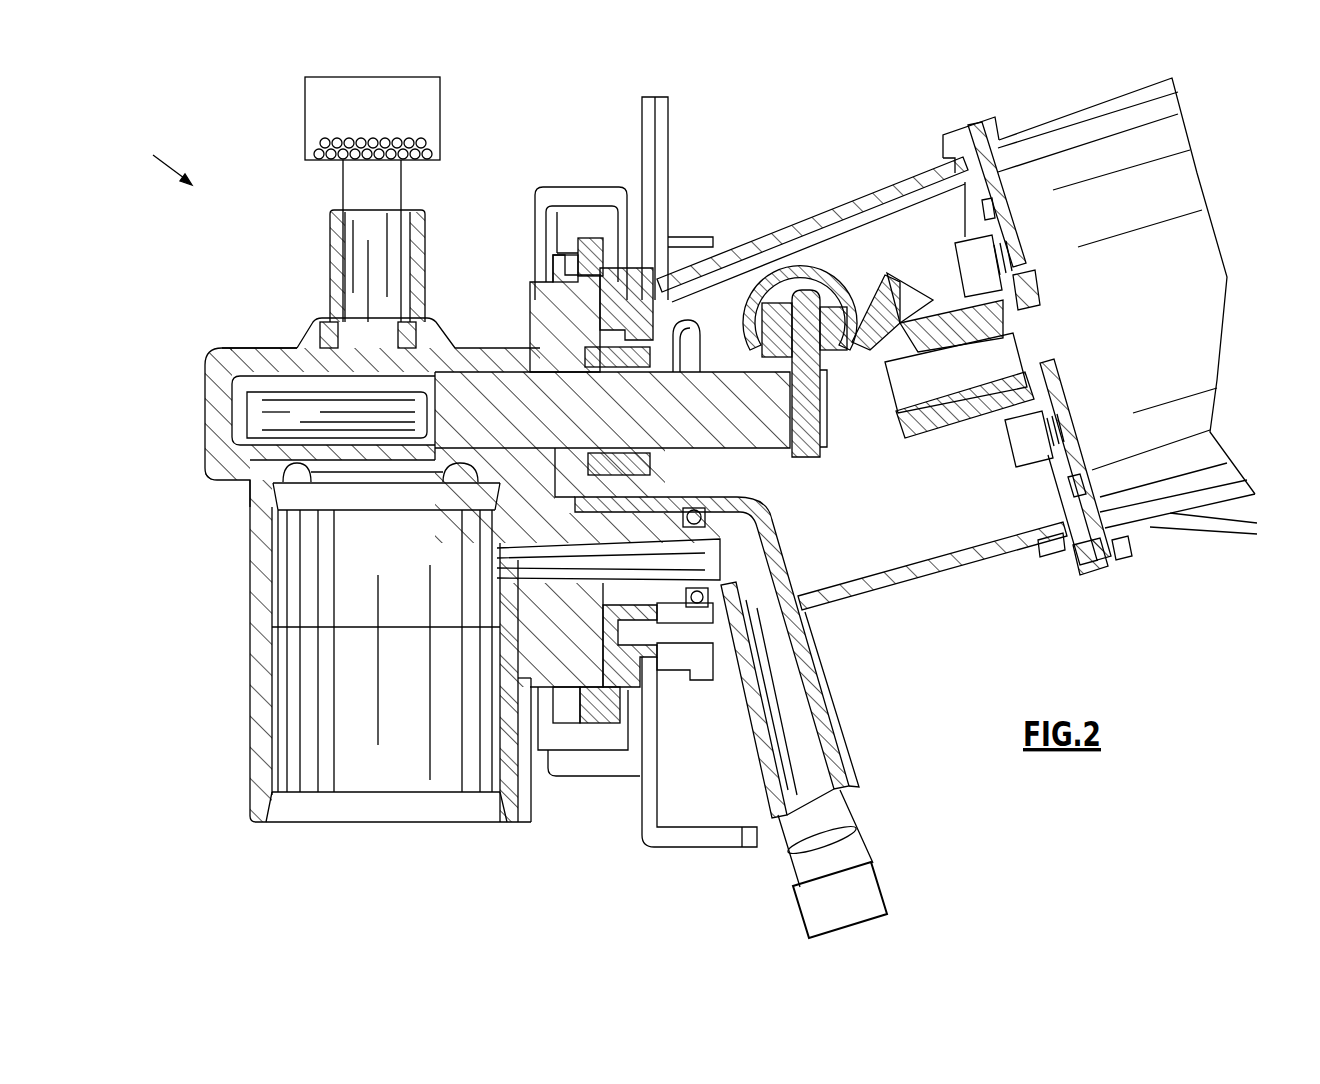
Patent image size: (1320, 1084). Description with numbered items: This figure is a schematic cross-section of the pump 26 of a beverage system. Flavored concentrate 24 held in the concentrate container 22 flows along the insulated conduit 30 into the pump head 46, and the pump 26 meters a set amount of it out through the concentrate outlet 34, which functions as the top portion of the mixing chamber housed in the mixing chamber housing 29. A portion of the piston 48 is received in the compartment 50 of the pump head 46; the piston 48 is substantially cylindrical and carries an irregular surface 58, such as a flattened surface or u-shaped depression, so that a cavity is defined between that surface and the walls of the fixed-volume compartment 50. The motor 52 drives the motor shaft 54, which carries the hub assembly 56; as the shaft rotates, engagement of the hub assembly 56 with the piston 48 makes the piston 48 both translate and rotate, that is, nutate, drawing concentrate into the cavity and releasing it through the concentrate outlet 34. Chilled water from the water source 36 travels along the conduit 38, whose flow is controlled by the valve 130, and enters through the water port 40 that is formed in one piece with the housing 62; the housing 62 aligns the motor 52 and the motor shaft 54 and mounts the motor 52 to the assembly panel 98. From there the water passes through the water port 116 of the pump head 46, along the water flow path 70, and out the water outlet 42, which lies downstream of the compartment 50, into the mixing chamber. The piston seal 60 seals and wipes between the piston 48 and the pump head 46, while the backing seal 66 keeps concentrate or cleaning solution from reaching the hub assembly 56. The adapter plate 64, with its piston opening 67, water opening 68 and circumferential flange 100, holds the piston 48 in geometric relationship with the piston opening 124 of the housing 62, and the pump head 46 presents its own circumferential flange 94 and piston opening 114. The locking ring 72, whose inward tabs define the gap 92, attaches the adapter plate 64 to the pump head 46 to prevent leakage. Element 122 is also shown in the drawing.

The concentrate container 22 is at (372, 118).
The flavored concentrate 24 is at (420, 141).
The pump 26 is at (156, 160).
The mixing chamber housing 29 is at (300, 607).
The conduit 30 is at (352, 193).
The concentrate outlet 34 is at (330, 472).
The water source 36 is at (840, 900).
The conduit 38 is at (840, 818).
The water port 40 is at (815, 705).
The water outlet 42 is at (500, 583).
The pump head 46 is at (258, 348).
The piston 48 is at (260, 450).
The compartment 50 is at (228, 398).
The motor 52 is at (1182, 178).
The motor shaft 54 is at (920, 380).
The hub assembly 56 is at (985, 410).
The irregular surface 58 is at (337, 415).
The piston seal 60 is at (618, 362).
The housing 62 is at (893, 183).
The adapter plate 64 is at (640, 320).
The backing seal 66 is at (630, 705).
The piston opening 67 is at (636, 357).
The water opening 68 is at (668, 612).
The water flow path 70 is at (557, 612).
The locking ring 72 is at (606, 190).
The gap 92 is at (593, 238).
The circumferential flange 94 is at (563, 250).
The assembly panel 98 is at (668, 115).
The circumferential flange 100 is at (590, 760).
The piston opening 114 is at (538, 324).
The water port 116 is at (602, 650).
The flange 122 is at (790, 540).
The piston opening 124 is at (682, 362).
The valve 130 is at (860, 835).